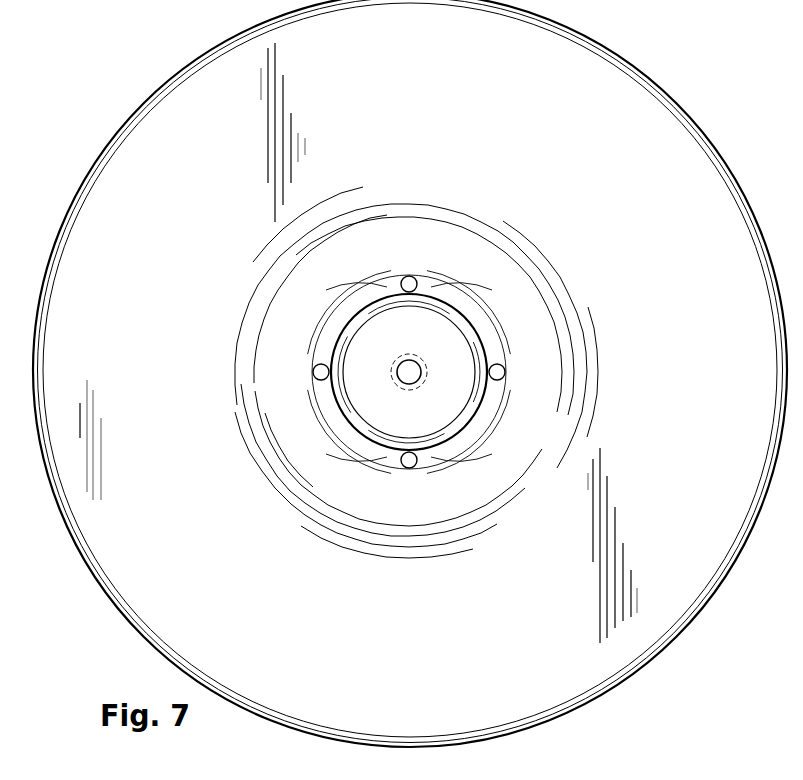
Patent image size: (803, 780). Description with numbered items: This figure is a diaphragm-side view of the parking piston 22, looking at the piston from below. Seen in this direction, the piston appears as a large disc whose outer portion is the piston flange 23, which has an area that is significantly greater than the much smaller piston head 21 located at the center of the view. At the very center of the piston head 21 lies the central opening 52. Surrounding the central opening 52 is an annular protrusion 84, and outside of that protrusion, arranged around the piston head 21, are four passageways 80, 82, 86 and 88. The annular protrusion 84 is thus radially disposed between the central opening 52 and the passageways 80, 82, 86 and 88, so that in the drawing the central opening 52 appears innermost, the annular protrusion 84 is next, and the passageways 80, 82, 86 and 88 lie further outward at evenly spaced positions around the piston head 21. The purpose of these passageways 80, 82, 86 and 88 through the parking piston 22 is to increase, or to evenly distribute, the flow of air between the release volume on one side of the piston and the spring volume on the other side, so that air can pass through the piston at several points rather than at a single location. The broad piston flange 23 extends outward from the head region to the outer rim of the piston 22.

The parking piston 22 is at (108, 98).
The piston flange 23 is at (113, 208).
The piston head 21 is at (368, 347).
The annular protrusion 84 is at (457, 425).
The central opening 52 is at (403, 383).
The passageway 86 is at (409, 276).
The passageway 88 is at (410, 469).
The passageway 80 is at (313, 372).
The passageway 82 is at (505, 371).